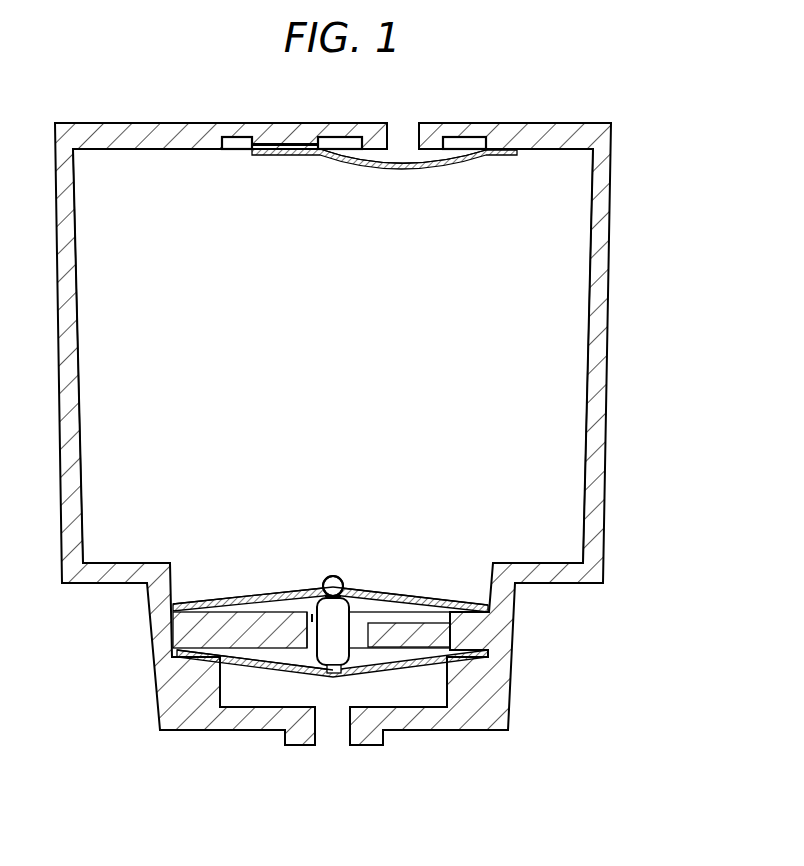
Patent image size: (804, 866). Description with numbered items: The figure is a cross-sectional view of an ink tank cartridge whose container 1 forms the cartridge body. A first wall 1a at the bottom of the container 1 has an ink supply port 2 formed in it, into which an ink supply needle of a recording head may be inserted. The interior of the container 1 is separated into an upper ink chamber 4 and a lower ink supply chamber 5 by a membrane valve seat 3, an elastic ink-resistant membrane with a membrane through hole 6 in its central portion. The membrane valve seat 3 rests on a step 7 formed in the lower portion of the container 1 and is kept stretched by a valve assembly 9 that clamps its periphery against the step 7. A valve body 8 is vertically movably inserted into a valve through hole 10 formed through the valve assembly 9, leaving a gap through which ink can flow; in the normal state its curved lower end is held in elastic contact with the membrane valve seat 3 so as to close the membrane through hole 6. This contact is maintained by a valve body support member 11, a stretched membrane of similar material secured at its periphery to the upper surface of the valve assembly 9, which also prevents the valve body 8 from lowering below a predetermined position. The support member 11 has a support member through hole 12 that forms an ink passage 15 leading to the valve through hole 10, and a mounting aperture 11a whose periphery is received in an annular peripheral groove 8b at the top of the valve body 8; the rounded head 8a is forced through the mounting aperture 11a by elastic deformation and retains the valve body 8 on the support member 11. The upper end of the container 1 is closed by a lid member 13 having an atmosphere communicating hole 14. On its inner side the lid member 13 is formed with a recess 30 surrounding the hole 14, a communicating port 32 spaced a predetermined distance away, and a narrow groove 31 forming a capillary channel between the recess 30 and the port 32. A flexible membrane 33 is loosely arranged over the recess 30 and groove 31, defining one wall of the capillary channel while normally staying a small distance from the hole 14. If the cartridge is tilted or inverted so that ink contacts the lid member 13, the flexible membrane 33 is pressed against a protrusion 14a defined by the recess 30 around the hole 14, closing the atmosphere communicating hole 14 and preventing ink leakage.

The container 1 is at (612, 234).
The first wall 1a is at (446, 734).
The ink supply port 2 is at (344, 740).
The membrane valve seat 3 is at (256, 666).
The ink chamber 4 is at (548, 362).
The ink supply chamber 5 is at (440, 692).
The membrane through hole 6 is at (332, 680).
The step 7 is at (484, 677).
The valve body 8 is at (352, 592).
The head 8a is at (340, 578).
The annular peripheral groove 8b is at (322, 592).
The valve assembly 9 is at (470, 632).
The valve through hole 10 is at (304, 588).
The valve body support member 11 is at (243, 598).
The mounting aperture 11a is at (333, 576).
The support member through hole 12 is at (285, 593).
The lid member 13 is at (292, 123).
The atmosphere communicating hole 14 is at (403, 137).
The protrusion 14a is at (432, 162).
The ink passage 15 is at (417, 601).
The recess 30 is at (341, 143).
The narrow groove 31 is at (279, 153).
The communicating port 32 is at (237, 151).
The flexible membrane 33 is at (363, 166).